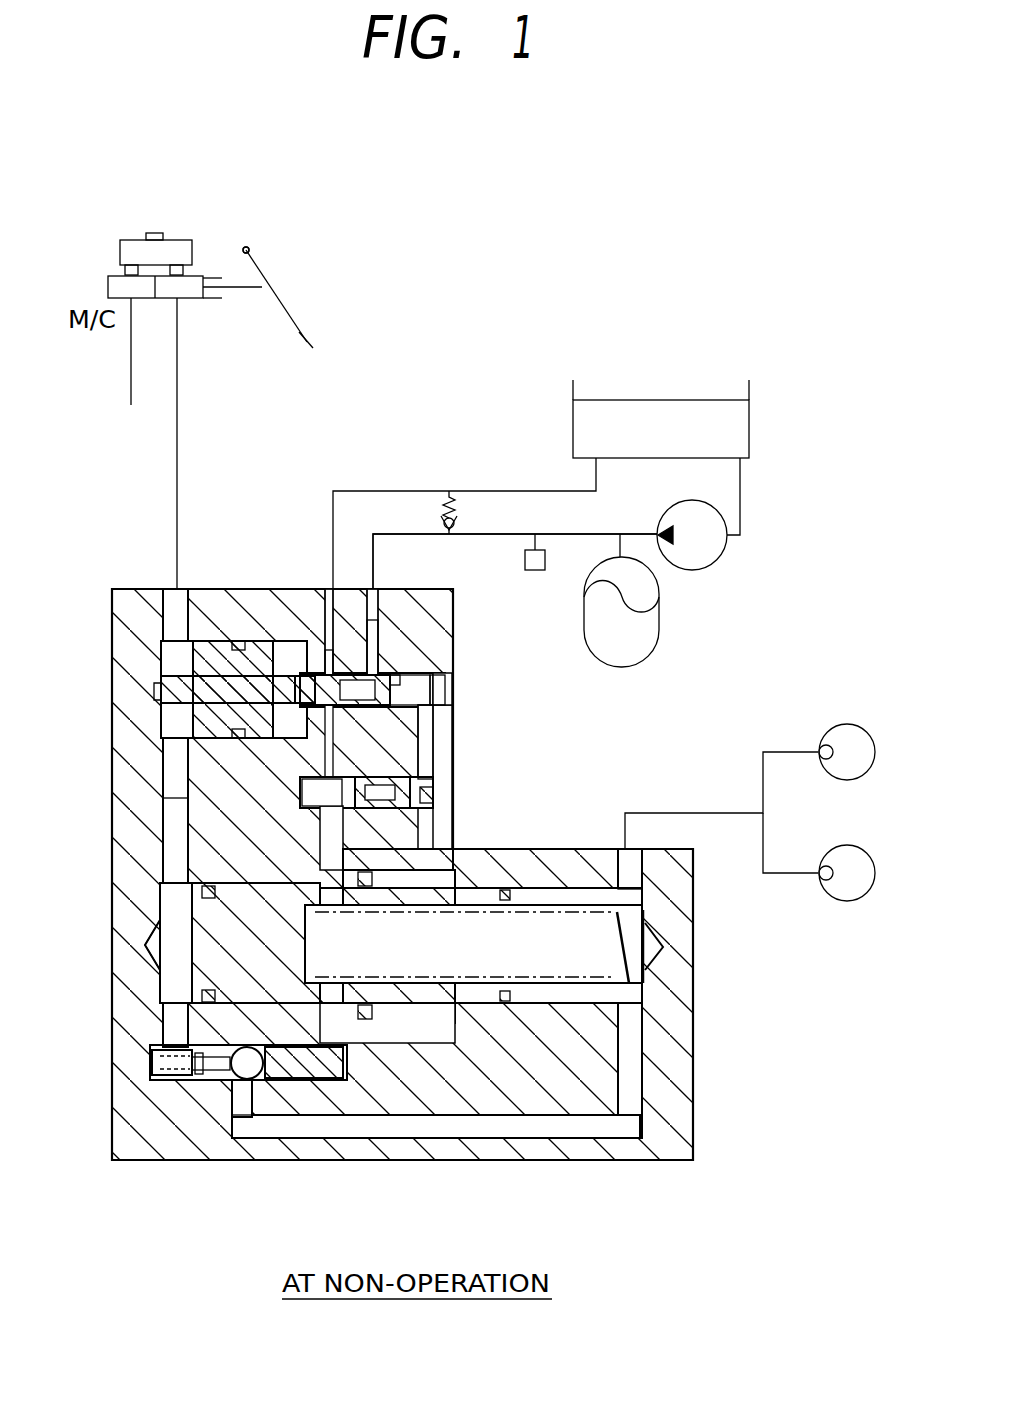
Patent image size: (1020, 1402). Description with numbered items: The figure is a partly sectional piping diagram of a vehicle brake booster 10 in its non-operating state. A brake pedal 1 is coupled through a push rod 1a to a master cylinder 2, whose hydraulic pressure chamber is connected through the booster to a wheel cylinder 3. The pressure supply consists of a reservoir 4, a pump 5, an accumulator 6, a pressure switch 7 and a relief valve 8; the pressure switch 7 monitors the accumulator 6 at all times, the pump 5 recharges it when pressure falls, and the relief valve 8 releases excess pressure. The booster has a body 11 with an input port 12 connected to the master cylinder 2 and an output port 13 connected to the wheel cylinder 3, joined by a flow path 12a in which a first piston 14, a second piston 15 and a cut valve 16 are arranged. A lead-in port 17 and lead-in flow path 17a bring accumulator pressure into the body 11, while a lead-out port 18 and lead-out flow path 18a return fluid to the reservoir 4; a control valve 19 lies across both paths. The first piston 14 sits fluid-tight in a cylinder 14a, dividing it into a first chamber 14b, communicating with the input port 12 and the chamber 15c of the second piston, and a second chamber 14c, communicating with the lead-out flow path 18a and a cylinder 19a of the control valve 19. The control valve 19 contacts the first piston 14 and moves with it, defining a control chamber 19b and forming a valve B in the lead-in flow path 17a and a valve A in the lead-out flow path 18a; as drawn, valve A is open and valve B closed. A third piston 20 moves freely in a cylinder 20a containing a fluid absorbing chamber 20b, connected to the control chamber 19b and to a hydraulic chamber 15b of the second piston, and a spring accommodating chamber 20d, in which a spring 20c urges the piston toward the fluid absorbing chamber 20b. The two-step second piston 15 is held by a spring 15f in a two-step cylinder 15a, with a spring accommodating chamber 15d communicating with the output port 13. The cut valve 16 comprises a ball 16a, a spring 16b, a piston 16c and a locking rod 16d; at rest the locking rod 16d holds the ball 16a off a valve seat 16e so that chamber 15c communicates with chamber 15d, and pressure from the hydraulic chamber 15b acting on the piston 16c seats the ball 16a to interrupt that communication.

The brake pedal 1 is at (278, 303).
The push rod 1a is at (245, 285).
The master cylinder 2 is at (195, 300).
The wheel cylinder 3 is at (832, 728).
The reservoir 4 is at (749, 420).
The pump 5 is at (722, 560).
The accumulator 6 is at (655, 652).
The pressure switch 7 is at (540, 570).
The relief valve 8 is at (452, 505).
The vehicle brake booster 10 is at (410, 763).
The body 11 is at (300, 589).
The input port 12 is at (170, 589).
The flow path 12a is at (178, 800).
The output port 13 is at (620, 850).
The first piston 14 is at (197, 658).
The cylinder 14a is at (290, 650).
The first chamber 14b is at (160, 728).
The second chamber 14c is at (238, 641).
The second piston 15 is at (215, 905).
The two-step cylinder 15a is at (200, 995).
The hydraulic chamber 15b is at (300, 853).
The chamber 15c is at (175, 960).
The spring accommodating chamber 15d is at (640, 905).
The spring 15f is at (585, 975).
The cut valve 16 is at (225, 1082).
The ball 16a is at (247, 1070).
The spring 16b is at (165, 1078).
The piston 16c is at (320, 1075).
The locking rod 16d is at (152, 1065).
The valve seat 16e is at (170, 1050).
The lead-in port 17 is at (373, 589).
The lead-in flow path 17a is at (378, 628).
The lead-out port 18 is at (328, 589).
The lead-out flow path 18a is at (372, 589).
The control valve 19 is at (435, 715).
The cylinder 19a is at (435, 688).
The control chamber 19b is at (435, 702).
The third piston 20 is at (400, 820).
The cylinder 20a is at (435, 782).
The fluid absorbing chamber 20b is at (435, 803).
The spring 20c is at (178, 770).
The spring accommodating chamber 20d is at (435, 775).
The valve A is at (343, 657).
The valve B is at (400, 675).